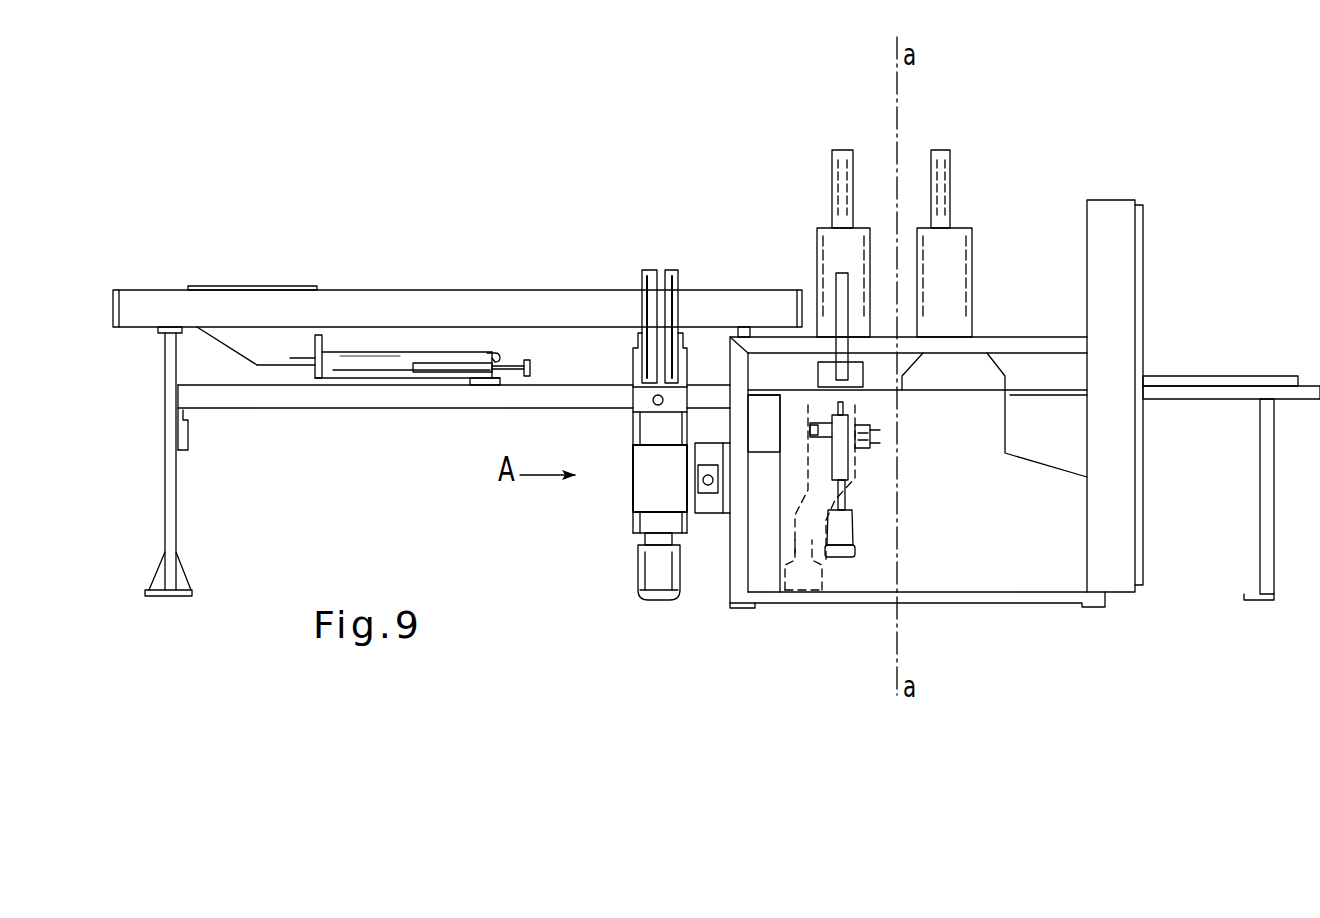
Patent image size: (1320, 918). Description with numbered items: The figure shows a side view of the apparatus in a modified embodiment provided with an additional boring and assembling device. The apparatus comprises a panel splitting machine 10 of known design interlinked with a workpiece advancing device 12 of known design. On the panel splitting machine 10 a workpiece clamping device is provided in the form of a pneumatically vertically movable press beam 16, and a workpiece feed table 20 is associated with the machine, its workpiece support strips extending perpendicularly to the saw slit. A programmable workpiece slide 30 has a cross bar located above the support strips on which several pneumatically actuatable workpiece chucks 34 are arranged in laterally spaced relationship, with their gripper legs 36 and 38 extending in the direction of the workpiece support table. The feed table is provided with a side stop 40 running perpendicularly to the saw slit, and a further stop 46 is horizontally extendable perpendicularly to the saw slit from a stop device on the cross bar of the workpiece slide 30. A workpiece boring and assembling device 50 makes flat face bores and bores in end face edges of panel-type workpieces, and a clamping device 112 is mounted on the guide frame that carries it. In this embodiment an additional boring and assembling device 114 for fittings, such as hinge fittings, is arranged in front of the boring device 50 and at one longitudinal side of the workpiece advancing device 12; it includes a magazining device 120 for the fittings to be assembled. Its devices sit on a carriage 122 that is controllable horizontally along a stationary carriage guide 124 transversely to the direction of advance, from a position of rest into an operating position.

The panel splitting machine 10 is at (1072, 612).
The workpiece advancing device 12 is at (317, 258).
The press beam 16 is at (965, 248).
The workpiece feed table 20 is at (1313, 395).
The programmable workpiece slide 30 is at (242, 285).
The workpiece chucks 34 is at (364, 362).
The gripper leg 36 is at (490, 351).
The gripper leg 38 is at (498, 386).
The side stop 40 is at (1200, 383).
The further stop 46 is at (518, 360).
The workpiece boring and assembling device 50 is at (838, 563).
The clamping device 112 is at (809, 238).
The boring and assembling device for fittings 114 is at (627, 488).
The magazining device 120 is at (672, 270).
The carriage 122 is at (660, 487).
The carriage guide 124 is at (708, 505).